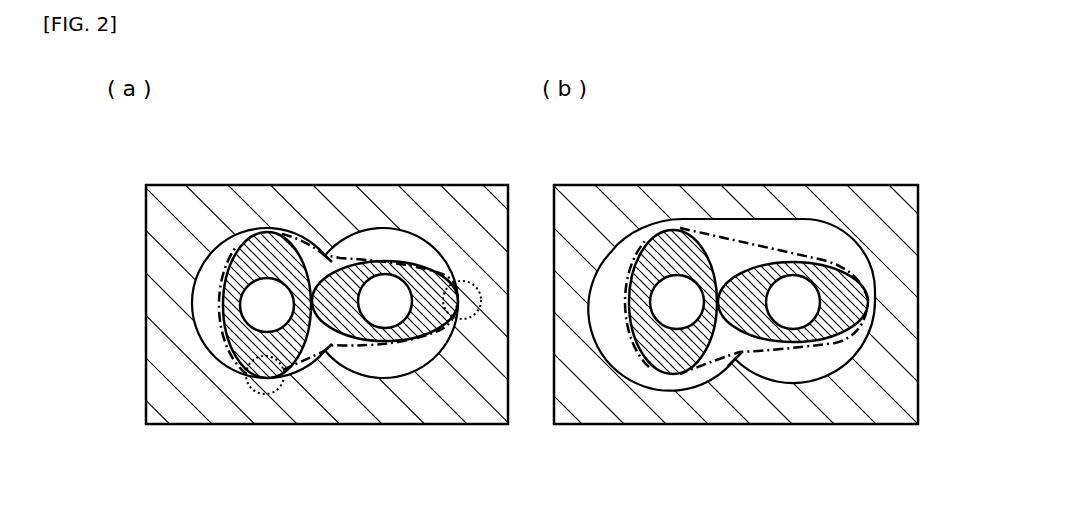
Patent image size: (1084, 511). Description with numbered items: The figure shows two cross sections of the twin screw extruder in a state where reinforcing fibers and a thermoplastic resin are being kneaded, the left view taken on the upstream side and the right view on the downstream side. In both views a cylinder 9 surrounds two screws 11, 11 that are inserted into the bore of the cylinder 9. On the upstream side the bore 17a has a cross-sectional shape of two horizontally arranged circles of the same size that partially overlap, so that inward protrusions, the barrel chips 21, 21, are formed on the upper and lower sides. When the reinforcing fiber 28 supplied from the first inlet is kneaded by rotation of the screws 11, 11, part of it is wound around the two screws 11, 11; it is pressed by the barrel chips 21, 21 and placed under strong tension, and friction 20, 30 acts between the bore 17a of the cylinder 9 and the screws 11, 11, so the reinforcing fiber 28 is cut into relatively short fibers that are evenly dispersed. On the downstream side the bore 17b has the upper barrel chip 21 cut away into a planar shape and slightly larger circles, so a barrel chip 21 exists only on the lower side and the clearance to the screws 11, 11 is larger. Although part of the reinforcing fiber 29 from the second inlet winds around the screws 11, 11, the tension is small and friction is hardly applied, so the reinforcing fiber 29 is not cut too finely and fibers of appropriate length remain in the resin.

The cylinder 9 is at (428, 185).
The bore 17a is at (196, 276).
The bore 17b is at (615, 250).
The screw 11 is at (247, 362).
The barrel chip 21 is at (322, 252).
The reinforcing fiber 28 is at (327, 258).
The reinforcing fiber 29 is at (730, 238).
The friction 20 is at (268, 394).
The friction 30 is at (466, 320).